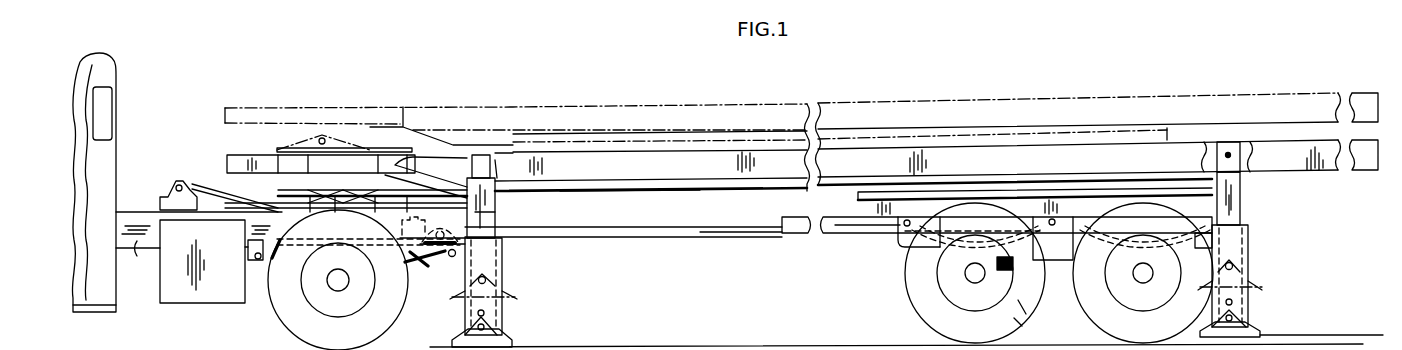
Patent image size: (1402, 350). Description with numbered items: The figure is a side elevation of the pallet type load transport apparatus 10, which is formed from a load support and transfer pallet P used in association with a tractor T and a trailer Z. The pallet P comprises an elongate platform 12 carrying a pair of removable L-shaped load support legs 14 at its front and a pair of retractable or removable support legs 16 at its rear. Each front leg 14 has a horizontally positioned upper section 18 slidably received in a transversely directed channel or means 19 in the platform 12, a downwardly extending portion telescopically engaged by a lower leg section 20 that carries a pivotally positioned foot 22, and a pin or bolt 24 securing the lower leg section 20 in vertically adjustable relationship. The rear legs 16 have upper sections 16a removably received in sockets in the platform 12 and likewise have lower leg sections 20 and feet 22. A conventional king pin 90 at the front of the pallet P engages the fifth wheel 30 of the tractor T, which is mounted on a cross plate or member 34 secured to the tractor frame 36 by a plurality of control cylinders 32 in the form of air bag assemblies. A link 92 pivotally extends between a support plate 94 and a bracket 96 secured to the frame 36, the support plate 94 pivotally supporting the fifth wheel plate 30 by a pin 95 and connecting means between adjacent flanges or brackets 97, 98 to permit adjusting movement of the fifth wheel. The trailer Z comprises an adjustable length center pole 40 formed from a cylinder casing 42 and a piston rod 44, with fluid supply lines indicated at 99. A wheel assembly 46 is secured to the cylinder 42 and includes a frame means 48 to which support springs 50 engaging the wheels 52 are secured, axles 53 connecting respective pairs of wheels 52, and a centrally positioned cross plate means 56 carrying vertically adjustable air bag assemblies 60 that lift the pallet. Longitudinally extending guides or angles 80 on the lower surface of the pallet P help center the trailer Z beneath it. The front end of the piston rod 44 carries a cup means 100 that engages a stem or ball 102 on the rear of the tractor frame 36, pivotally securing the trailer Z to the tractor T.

The pallet type load transport apparatus 10 is at (662, 263).
The elongate platform 12 is at (614, 182).
The removable load support legs 14 is at (507, 267).
The retractable and/or removable support legs 16 is at (1252, 248).
The upper sections 16a is at (1242, 205).
The upper section 18 is at (477, 162).
The channel or means 19 is at (498, 158).
The lower leg section 20 is at (502, 313).
The foot 22 is at (508, 339).
The pin or bolt 24 is at (490, 278).
The fifth wheel 30 is at (292, 175).
The control cylinders 32 is at (274, 251).
The cross plate or member 34 is at (312, 243).
The frame 36 is at (137, 250).
The adjustable length center pole 40 is at (637, 238).
The casing 42 is at (843, 233).
The piston rod 44 is at (735, 232).
The wheel assembly 46 is at (910, 307).
The frame means 48 is at (856, 203).
The support springs 50 is at (902, 262).
The wheels 52 is at (1020, 320).
The axles 53 is at (978, 274).
The subframe or cross plate means 56 is at (1022, 317).
The air bag assemblies 60 is at (990, 230).
The guide or angle 80 is at (692, 192).
The king pin 90 is at (340, 123).
The link 92 is at (190, 183).
The support plate 94 is at (272, 193).
The pin 95 is at (328, 205).
The bracket 96 is at (170, 187).
The flange or bracket 97 is at (370, 205).
The flange or bracket 98 is at (382, 167).
The fluid supply lines 99 is at (790, 233).
The cup means 100 is at (415, 263).
The stem or ball 102 is at (497, 212).
The load support and transfer pallet P is at (683, 100).
The tractor T is at (155, 307).
The trailer Z is at (860, 242).